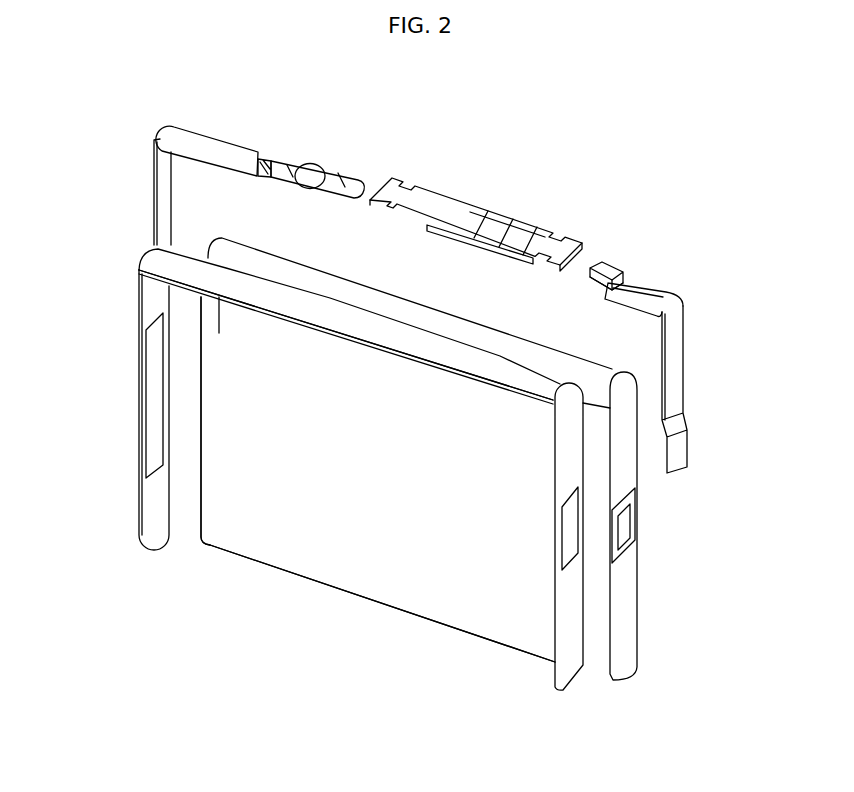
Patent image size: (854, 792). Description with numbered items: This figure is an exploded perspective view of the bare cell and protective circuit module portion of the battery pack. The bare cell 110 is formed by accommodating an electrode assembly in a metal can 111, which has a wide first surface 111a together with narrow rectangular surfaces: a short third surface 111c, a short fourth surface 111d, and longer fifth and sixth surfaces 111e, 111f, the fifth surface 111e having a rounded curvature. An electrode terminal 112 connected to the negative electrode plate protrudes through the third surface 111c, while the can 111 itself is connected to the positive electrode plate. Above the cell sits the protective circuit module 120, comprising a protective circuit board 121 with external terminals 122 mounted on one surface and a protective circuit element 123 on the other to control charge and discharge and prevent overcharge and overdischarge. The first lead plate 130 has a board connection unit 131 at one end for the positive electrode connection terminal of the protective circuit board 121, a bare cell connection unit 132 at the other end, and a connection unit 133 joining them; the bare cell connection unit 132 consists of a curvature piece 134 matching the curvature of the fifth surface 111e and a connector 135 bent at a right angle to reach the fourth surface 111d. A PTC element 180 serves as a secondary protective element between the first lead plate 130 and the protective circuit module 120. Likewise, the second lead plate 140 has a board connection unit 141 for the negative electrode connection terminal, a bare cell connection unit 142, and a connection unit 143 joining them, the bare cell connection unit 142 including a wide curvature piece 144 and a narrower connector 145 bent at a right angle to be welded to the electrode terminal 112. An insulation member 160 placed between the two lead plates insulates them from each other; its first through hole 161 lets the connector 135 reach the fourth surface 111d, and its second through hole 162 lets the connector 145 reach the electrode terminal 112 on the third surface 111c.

The bare cell 110 is at (431, 462).
The can 111 is at (425, 462).
The first surface 111a is at (277, 547).
The third surface 111c is at (630, 618).
The fourth surface 111d is at (199, 511).
The fifth surface 111e is at (530, 348).
The sixth surface 111f is at (427, 619).
The electrode terminal 112 is at (633, 534).
The protective circuit module 120 is at (476, 209).
The protective circuit board 121 is at (457, 205).
The external terminals 122 is at (533, 230).
The protective circuit element 123 is at (470, 246).
The first lead plate 130 is at (200, 159).
The board connection unit 131 is at (278, 180).
The bare cell connection unit 132 is at (147, 181).
The connection unit 133 is at (258, 176).
The curvature piece 134 is at (166, 136).
The connector 135 is at (163, 178).
The second lead plate 140 is at (695, 340).
The board connection unit 141 is at (604, 268).
The bare cell connection unit 142 is at (704, 378).
The connection unit 143 is at (622, 278).
The curvature piece 144 is at (670, 291).
The connector 145 is at (677, 348).
The insulation member 160 is at (377, 469).
The first through hole 161 is at (153, 400).
The second through hole 162 is at (572, 510).
The positive temperature coefficient (PTC) element 180 is at (323, 152).